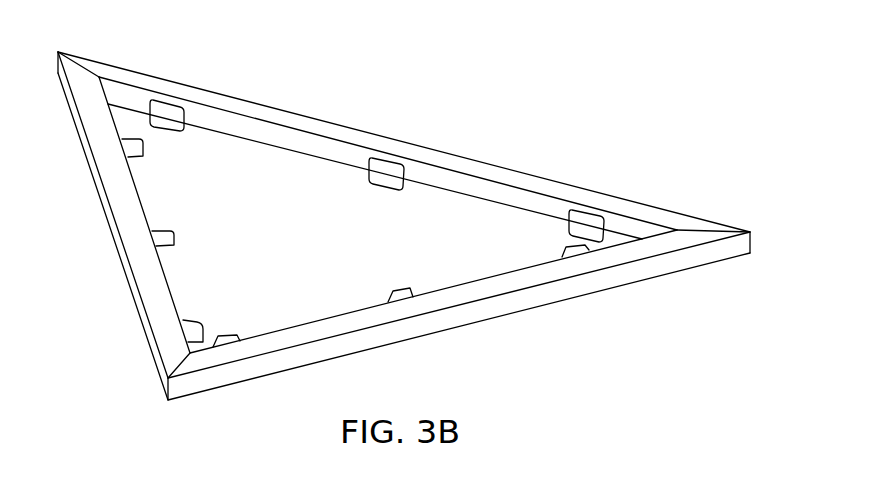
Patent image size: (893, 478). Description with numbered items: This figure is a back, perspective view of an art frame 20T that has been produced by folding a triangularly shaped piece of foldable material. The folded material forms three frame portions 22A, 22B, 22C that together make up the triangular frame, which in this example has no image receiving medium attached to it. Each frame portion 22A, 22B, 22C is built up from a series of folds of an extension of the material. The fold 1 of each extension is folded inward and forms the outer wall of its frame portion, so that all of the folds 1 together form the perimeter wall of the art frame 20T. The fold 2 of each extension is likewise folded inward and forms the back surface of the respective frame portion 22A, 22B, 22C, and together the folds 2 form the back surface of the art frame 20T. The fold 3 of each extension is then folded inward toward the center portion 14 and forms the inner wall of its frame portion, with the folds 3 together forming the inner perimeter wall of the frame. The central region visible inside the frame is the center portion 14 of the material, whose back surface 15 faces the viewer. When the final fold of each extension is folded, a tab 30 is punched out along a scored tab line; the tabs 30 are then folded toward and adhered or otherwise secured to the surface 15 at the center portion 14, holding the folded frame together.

The art frame 20T is at (393, 211).
The frame portion 22A is at (620, 274).
The frame portion 22B is at (360, 95).
The frame portion 22C is at (140, 312).
The fold 1 is at (118, 238).
The fold 2 is at (388, 215).
The fold 3 is at (375, 171).
The center portion 14 is at (316, 232).
The surface 15 is at (435, 258).
The tab 30 is at (174, 130).